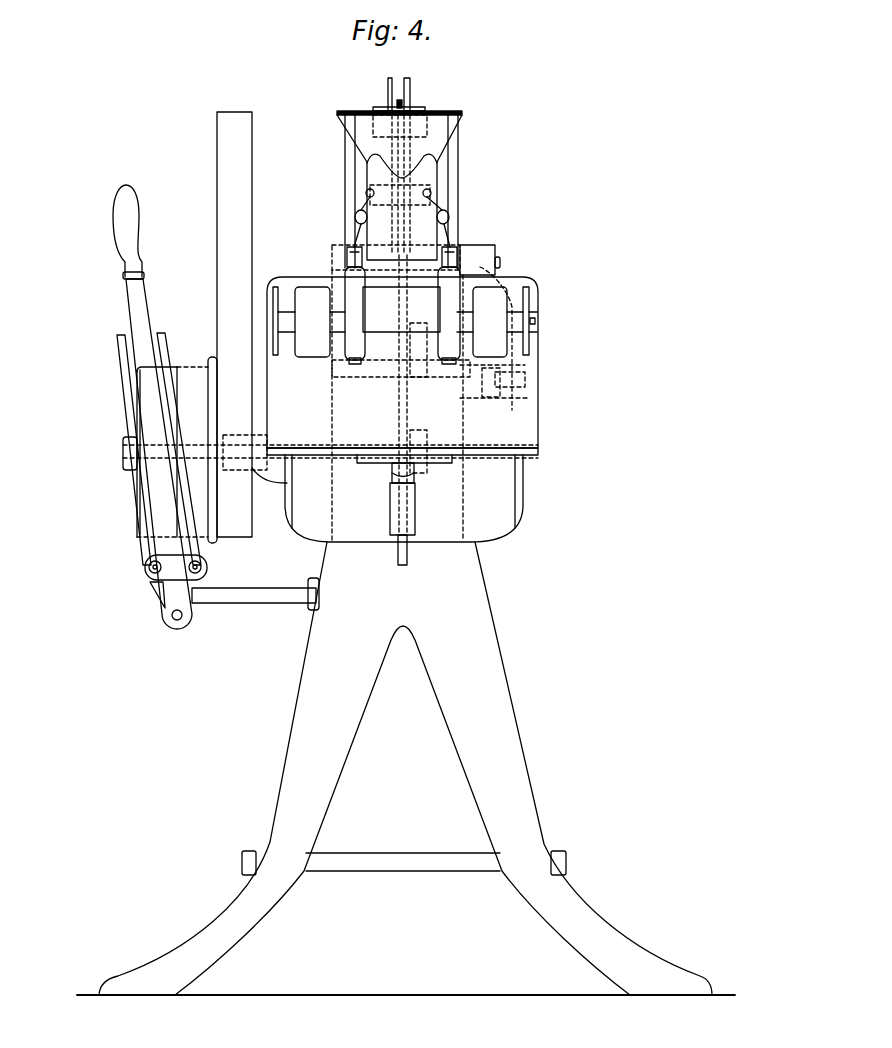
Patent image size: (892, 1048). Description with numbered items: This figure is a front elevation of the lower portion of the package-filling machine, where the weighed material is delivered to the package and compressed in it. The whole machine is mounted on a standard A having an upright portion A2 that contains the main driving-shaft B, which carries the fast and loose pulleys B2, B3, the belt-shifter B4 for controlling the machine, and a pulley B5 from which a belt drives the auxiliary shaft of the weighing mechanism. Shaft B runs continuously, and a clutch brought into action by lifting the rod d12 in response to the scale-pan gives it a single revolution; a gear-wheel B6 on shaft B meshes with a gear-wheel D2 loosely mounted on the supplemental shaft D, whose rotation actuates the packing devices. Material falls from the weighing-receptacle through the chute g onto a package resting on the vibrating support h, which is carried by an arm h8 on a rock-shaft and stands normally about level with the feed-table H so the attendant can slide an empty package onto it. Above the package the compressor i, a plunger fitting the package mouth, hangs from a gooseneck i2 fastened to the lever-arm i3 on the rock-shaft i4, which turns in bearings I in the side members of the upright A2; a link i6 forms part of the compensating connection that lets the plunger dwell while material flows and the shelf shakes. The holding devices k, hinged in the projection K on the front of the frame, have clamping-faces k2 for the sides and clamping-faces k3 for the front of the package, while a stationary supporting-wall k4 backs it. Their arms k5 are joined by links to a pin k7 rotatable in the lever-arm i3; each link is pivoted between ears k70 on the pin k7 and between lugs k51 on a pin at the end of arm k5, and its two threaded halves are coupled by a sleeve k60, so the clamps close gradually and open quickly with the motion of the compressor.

The standard A is at (510, 731).
The upright portion A2 is at (348, 175).
The main driving-shaft B is at (477, 447).
The fast pulley B2 is at (142, 540).
The loose pulley B3 is at (206, 545).
The belt-shifter B4 is at (137, 317).
The pulley B5 is at (250, 537).
The gear-wheel B6 is at (410, 438).
The supplemental shaft D is at (330, 385).
The gear-wheel D2 is at (355, 395).
The feed-table H is at (515, 470).
The vibrating support h is at (414, 475).
The arm h8 is at (414, 410).
The bearings I is at (348, 233).
The compressor i is at (427, 110).
The gooseneck i2 is at (399, 82).
The lever-arm i3 is at (390, 232).
The rock-shaft i4 is at (495, 262).
The link i6 is at (527, 398).
The rod d12 is at (400, 103).
The chute g is at (437, 205).
The projection K is at (440, 340).
The holding devices k is at (535, 318).
The clamping-faces k2 is at (401, 322).
The clamping-faces k3 is at (278, 287).
The stationary supporting-wall k4 is at (397, 405).
The arms k5 is at (340, 272).
The lugs k51 is at (343, 248).
The sleeve k60 is at (356, 215).
The spindle or pin k7 is at (430, 183).
The ears k70 is at (366, 193).